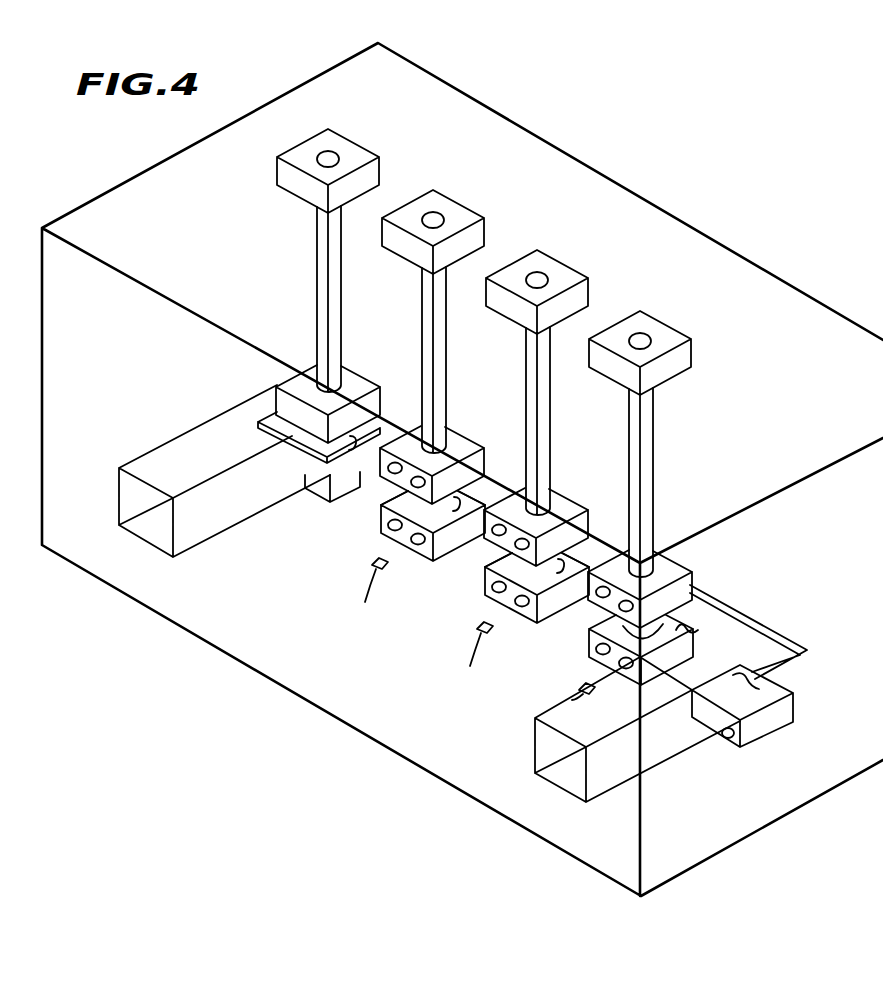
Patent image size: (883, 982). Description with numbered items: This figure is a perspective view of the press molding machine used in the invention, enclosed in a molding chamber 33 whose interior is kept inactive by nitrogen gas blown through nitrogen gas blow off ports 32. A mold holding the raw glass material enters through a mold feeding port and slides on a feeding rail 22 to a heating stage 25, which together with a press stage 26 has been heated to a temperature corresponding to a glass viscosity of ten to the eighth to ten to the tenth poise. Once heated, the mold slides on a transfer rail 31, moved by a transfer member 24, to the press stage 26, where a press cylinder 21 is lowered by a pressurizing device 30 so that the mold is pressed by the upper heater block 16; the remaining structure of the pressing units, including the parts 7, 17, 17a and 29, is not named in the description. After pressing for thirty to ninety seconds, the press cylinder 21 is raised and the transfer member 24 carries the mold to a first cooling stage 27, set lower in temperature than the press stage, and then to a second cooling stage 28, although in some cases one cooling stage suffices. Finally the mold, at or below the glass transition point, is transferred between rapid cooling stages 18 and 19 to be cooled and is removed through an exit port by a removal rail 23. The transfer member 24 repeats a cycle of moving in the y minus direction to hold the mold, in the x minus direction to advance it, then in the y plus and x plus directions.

The semicircular notch 7 is at (623, 626).
The upper heater block 16 is at (455, 418).
The block 17 is at (431, 558).
The hole 17a is at (388, 529).
The rapid cooling stage 18 is at (340, 378).
The rapid cooling stage 19 is at (320, 493).
The press cylinder 21 is at (332, 250).
The feeding rail 22 is at (665, 763).
The removal rail 23 is at (225, 530).
The transfer member 24 is at (807, 652).
The heating stage 25 is at (785, 683).
The press stage 26 is at (676, 628).
The first cooling stage 27 is at (485, 565).
The second cooling stage 28 is at (383, 502).
The base plate 29 is at (298, 448).
The pressurizing device 30 is at (358, 156).
The transfer rail 31 is at (683, 660).
The nitrogen gas blow off port 32 is at (469, 644).
The molding chamber 33 is at (773, 270).